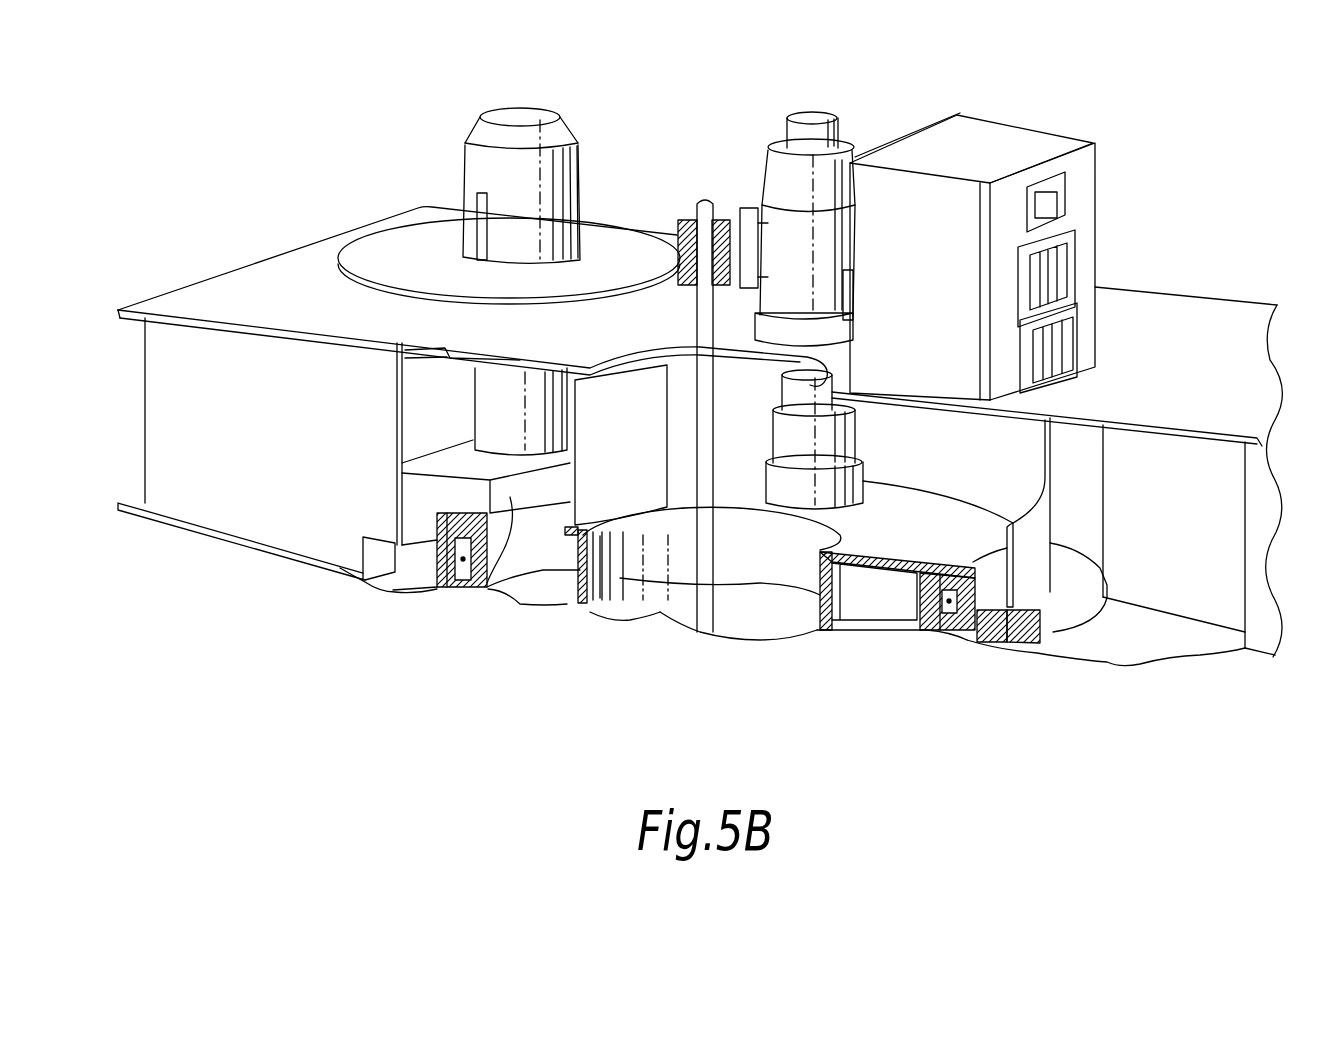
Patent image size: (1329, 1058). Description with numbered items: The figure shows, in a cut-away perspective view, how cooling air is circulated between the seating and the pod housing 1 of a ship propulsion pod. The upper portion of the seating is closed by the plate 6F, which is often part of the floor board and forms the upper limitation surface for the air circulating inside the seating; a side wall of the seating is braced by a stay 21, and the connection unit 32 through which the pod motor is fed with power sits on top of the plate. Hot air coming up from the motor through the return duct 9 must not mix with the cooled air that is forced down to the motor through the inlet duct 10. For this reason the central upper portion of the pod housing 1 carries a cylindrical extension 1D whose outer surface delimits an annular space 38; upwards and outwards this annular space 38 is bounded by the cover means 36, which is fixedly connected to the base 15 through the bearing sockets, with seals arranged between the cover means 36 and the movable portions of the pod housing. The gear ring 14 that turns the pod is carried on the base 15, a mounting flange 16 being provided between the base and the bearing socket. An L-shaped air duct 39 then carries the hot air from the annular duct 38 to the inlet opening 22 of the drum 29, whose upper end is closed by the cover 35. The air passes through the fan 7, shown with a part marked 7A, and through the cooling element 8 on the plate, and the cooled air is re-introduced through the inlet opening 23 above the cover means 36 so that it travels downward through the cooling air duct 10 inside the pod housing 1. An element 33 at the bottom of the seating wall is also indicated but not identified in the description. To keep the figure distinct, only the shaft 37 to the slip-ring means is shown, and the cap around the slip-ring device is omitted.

The pod housing 1 is at (857, 440).
The cylindrical extension 1D is at (613, 572).
The plate 6F is at (225, 297).
The fan 7 is at (392, 245).
The knob 7A is at (520, 110).
The cooling element 8 is at (1220, 582).
The return duct 9 is at (868, 613).
The inlet duct 10 is at (660, 612).
The gear ring 14 is at (925, 630).
The base 15 is at (1023, 647).
The mounting flange 16 is at (985, 650).
The stay 21 is at (165, 395).
The inlet opening 22 is at (430, 410).
The inlet opening 23 is at (1050, 497).
The drum 29 is at (761, 401).
The connection unit 32 is at (1085, 190).
The support 33 is at (430, 480).
The cover 35 is at (562, 342).
The cover means 36 is at (680, 487).
The shaft 37 is at (690, 333).
The annular space 38 is at (540, 550).
The L-shaped air duct 39 is at (483, 585).